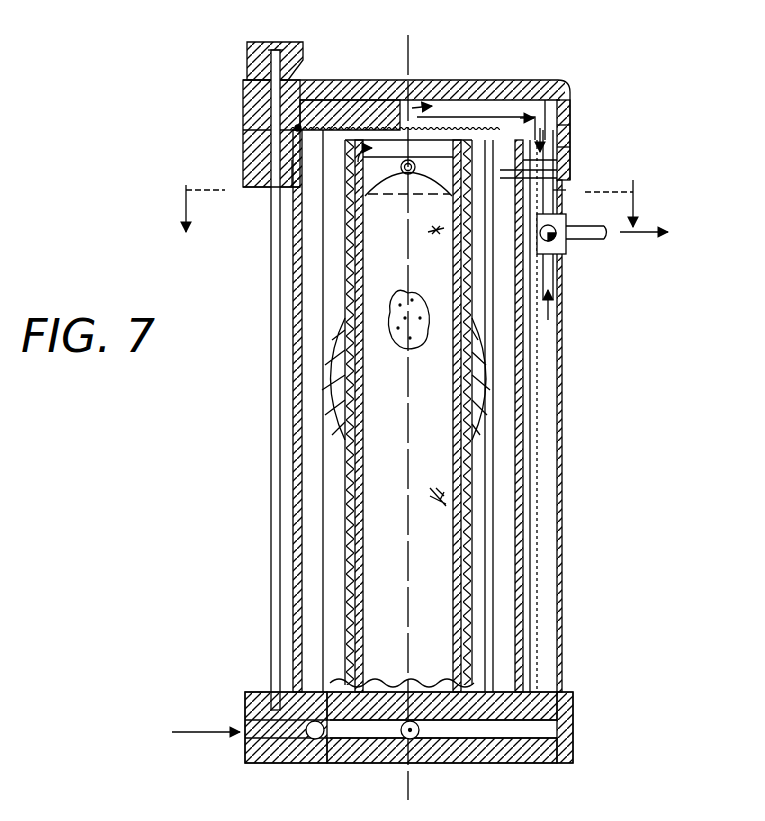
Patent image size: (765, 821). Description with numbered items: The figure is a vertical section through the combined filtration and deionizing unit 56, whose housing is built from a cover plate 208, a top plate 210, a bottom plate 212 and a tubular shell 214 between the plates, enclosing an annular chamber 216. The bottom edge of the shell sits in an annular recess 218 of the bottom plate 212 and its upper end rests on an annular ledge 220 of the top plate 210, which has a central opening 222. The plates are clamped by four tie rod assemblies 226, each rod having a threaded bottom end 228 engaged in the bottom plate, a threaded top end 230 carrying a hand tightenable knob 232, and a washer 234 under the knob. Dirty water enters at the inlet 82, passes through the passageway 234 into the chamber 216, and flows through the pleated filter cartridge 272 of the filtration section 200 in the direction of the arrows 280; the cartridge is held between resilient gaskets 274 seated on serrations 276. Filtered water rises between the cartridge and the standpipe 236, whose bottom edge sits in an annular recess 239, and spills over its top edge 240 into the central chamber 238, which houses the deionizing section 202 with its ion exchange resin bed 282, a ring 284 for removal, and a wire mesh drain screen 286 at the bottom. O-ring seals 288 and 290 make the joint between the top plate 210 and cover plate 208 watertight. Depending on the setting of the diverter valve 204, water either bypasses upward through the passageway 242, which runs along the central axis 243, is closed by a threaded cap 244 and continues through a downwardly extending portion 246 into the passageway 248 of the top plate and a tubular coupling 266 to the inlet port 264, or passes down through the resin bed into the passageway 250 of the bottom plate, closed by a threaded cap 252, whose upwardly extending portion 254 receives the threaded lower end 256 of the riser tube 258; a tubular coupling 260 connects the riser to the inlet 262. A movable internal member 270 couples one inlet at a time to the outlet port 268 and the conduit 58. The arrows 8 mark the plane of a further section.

The section line 8- 8 is at (410, 192).
The combined filtration/ion adjusting unit 56 is at (250, 523).
The conduit 58 is at (658, 245).
The dirty water inlet 82 is at (245, 733).
The filtration section 200 is at (335, 570).
The deionization section 202 is at (380, 580).
The diverter valve 204 is at (572, 250).
The cover plate 208 is at (243, 105).
The top plate 210 is at (243, 150).
The bottom plate 212 is at (245, 712).
The tubular shell 214 is at (296, 225).
The annular chamber 216 is at (312, 273).
The annular recess 218 is at (285, 735).
The annular ledge 220 is at (292, 187).
The central opening 222 is at (330, 125).
The tie rod assemblies 226 is at (272, 405).
The threaded bottom end 228 is at (265, 695).
The threaded top end 230 is at (270, 72).
The hand tightenable knob 232 is at (258, 48).
The washer 234 is at (298, 75).
The standpipe 236 is at (352, 482).
The central chamber 238 is at (412, 175).
The annular recess 239 is at (317, 708).
The top edge 240 is at (520, 160).
The passageway 242 is at (473, 100).
The central axis 243 is at (408, 770).
The threaded cap 244 is at (568, 100).
The downwardly extending portion 246 is at (553, 80).
The passageway 248 is at (560, 147).
The passageway 250 is at (352, 708).
The threaded cap 252 is at (575, 735).
The upwardly extending portion 254 is at (565, 712).
The threaded lower end 256 is at (540, 725).
The riser tube 258 is at (563, 574).
The tubular coupling 260 is at (555, 288).
The inlet 262 is at (556, 258).
The inlet port 264 is at (556, 210).
The tubular coupling 266 is at (558, 170).
The outlet port 268 is at (568, 235).
The movable internal member 270 is at (575, 222).
The filter cartridge 272 is at (327, 318).
The resilient gaskets 274 is at (358, 108).
The serrations 276 is at (447, 128).
The arrows 280 is at (322, 418).
The ion exchange resin bed 282 is at (405, 342).
The ring 284 is at (398, 172).
The wire mesh drain screen 286 is at (380, 752).
The O-ring seal 288 is at (300, 127).
The O-ring seal 290 is at (560, 125).